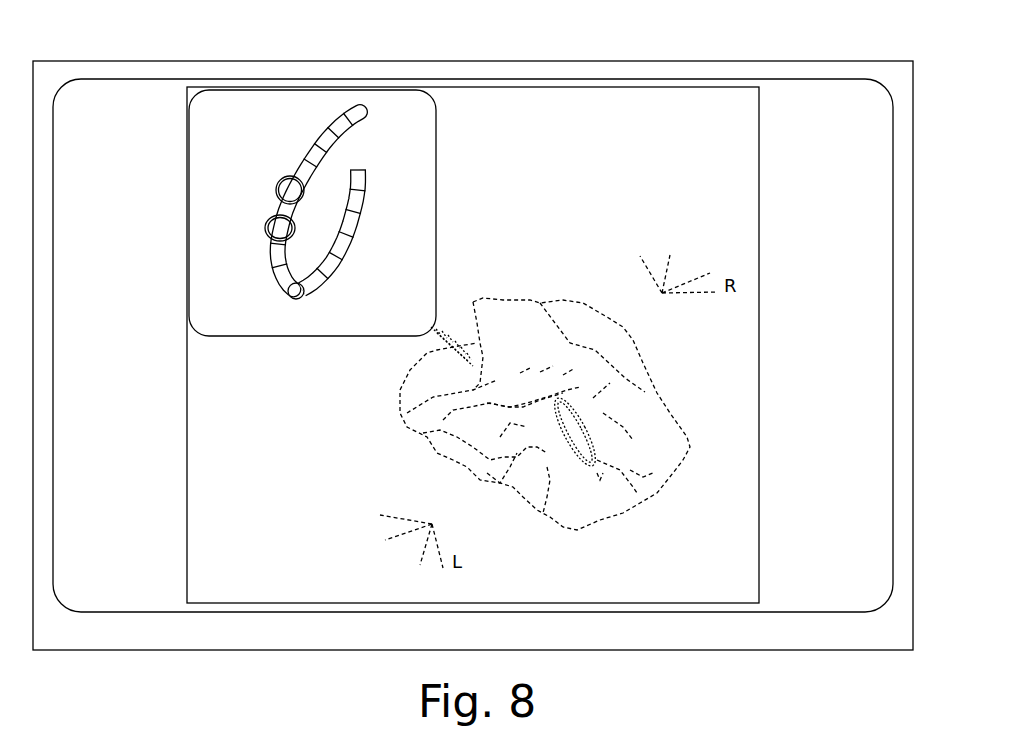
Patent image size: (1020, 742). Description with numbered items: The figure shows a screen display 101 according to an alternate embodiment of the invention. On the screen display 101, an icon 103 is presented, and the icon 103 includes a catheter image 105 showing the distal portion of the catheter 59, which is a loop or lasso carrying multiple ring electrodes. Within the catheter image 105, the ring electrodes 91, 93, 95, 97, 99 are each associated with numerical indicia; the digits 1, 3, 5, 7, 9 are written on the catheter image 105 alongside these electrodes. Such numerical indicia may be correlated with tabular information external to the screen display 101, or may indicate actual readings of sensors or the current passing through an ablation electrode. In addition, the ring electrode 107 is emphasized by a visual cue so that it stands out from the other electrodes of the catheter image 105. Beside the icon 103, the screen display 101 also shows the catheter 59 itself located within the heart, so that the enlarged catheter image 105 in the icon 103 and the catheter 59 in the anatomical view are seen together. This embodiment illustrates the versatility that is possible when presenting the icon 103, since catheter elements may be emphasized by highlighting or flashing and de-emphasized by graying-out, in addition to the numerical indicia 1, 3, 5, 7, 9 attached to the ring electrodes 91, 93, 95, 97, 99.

The screen display 101 is at (153, 61).
The icon 103 is at (187, 236).
The catheter image 105 is at (413, 192).
The ring electrode 107 is at (265, 227).
The ring electrode 99 is at (286, 196).
The ring electrode 97 is at (260, 176).
The ring electrode 95 is at (242, 281).
The ring electrode 93 is at (283, 328).
The ring electrode 91 is at (363, 229).
The catheter 59 is at (590, 441).
The electrode 1 is at (322, 136).
The electrode 3 is at (277, 184).
The electrode 5 is at (266, 271).
The electrode 7 is at (300, 300).
The electrode 9 is at (347, 250).